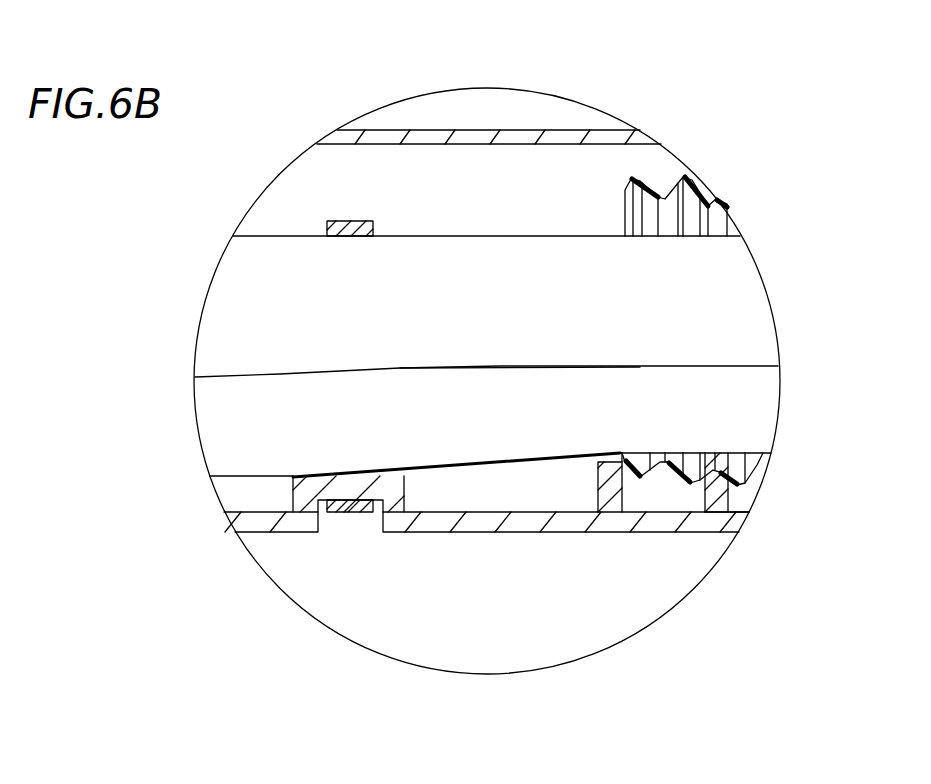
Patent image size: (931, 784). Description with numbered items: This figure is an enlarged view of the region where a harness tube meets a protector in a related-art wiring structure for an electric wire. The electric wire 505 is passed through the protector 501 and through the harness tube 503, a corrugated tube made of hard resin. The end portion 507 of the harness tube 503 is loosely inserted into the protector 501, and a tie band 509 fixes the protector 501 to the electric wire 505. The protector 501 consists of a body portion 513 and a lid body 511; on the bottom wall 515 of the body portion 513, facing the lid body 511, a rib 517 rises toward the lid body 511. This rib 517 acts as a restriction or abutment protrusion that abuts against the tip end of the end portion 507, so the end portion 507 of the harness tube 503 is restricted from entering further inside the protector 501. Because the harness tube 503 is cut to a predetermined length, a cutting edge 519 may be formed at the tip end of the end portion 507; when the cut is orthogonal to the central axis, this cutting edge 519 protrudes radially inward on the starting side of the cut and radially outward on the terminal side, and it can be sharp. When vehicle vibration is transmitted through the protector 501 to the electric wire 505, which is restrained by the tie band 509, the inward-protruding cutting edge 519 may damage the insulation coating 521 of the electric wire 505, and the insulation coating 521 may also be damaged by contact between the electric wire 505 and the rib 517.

The protector 501 is at (512, 128).
The harness tube 503 is at (776, 468).
The electric wire 505 is at (764, 405).
The end portion 507 is at (643, 482).
The tie band 509 is at (345, 516).
The lid body 511 is at (420, 130).
The body portion 513 is at (257, 533).
The bottom wall 515 is at (487, 512).
The rib 517 is at (600, 465).
The cutting edge 519 is at (622, 452).
The insulation coating 521 is at (660, 391).